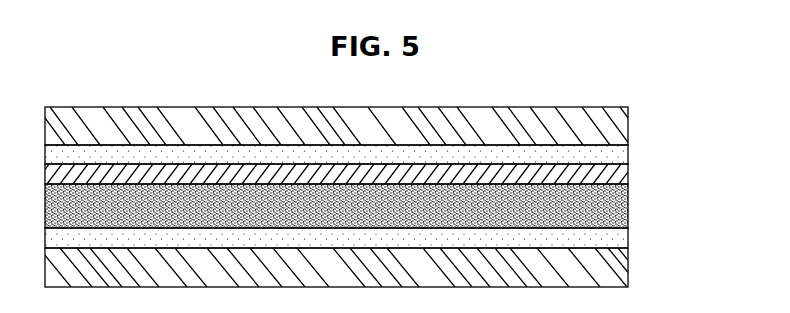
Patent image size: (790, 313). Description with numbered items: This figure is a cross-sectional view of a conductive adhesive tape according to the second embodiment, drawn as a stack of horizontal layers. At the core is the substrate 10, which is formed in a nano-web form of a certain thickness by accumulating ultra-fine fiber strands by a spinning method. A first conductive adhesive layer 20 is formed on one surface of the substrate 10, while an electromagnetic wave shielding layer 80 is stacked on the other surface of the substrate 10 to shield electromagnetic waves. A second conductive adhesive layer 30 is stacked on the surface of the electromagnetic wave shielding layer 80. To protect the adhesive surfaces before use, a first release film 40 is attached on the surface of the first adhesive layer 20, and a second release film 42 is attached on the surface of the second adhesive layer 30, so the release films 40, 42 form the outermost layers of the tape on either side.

The first release film 40 is at (617, 126).
The second conductive adhesive layer 30 is at (618, 155).
The electromagnetic wave shielding layer 80 is at (618, 175).
The substrate 10 is at (628, 202).
The first conductive adhesive layer 20 is at (618, 237).
The second release film 42 is at (618, 267).